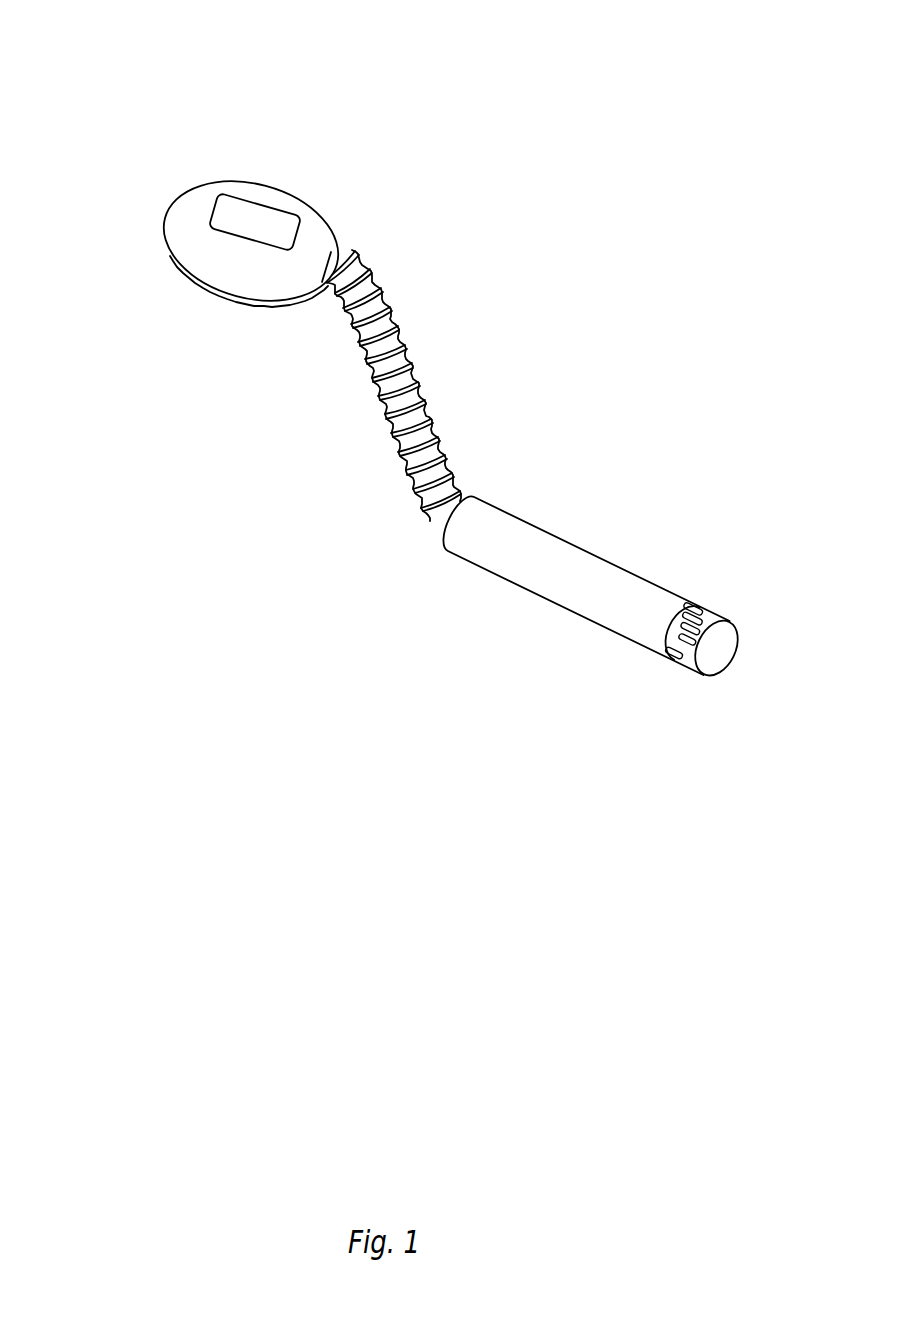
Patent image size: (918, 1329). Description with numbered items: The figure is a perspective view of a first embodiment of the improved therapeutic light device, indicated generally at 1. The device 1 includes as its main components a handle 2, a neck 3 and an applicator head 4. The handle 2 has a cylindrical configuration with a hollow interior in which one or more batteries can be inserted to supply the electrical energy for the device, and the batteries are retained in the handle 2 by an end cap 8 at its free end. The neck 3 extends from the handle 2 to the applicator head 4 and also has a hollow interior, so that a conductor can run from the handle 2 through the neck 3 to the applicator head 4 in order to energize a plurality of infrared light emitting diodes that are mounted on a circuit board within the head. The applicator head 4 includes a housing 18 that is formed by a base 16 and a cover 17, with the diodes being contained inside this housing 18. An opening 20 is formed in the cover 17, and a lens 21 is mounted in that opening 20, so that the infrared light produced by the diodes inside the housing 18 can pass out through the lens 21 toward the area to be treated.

The therapy light device 1 is at (572, 218).
The handle 2 is at (580, 540).
The neck 3 is at (422, 392).
The applicator head 4 is at (190, 189).
The end cap 8 is at (723, 647).
The base 16 is at (260, 303).
The cover 17 is at (323, 233).
The housing 18 is at (158, 225).
The opening 20 is at (252, 207).
The lens 21 is at (223, 213).